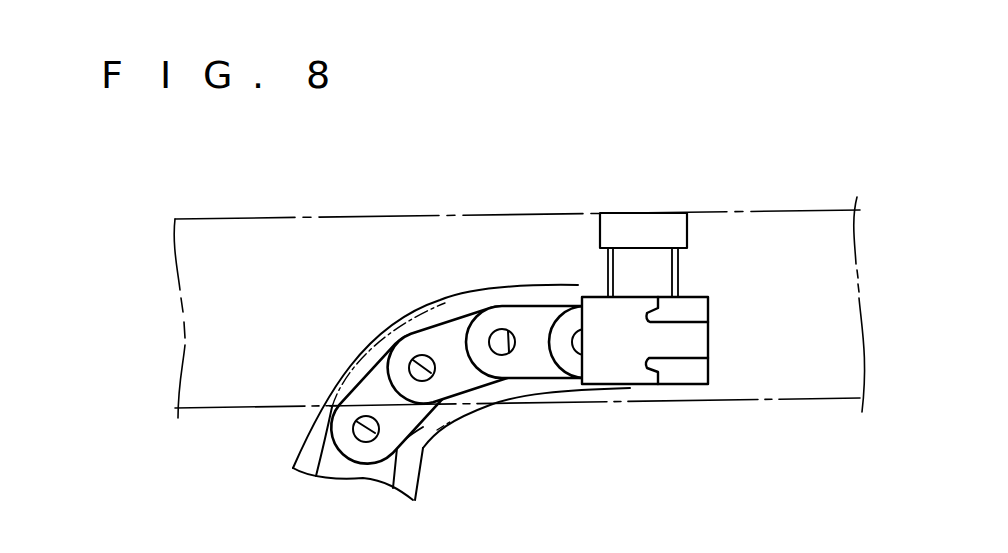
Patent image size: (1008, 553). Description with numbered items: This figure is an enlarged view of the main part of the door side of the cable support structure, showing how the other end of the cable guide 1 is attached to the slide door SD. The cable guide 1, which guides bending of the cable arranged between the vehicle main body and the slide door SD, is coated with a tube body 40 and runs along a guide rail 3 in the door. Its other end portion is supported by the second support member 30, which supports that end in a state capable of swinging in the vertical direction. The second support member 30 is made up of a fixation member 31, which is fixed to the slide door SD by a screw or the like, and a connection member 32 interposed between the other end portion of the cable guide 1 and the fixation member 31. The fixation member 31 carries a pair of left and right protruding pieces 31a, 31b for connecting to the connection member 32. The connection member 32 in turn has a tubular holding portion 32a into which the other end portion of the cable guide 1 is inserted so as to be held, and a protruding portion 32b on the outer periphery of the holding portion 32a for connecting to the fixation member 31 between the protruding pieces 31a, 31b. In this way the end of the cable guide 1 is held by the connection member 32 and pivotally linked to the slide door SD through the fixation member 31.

The cable guide 1 is at (418, 332).
The guide rail 3 is at (417, 433).
The tube body 40 is at (353, 352).
The second support member 30 is at (672, 311).
The fixation member 31 is at (693, 224).
The protruding piece 31a is at (607, 283).
The protruding piece 31b is at (683, 259).
The connection member 32 is at (703, 312).
The holding portion 32a is at (630, 386).
The protruding portion 32b is at (651, 262).
The slide door SD is at (277, 219).